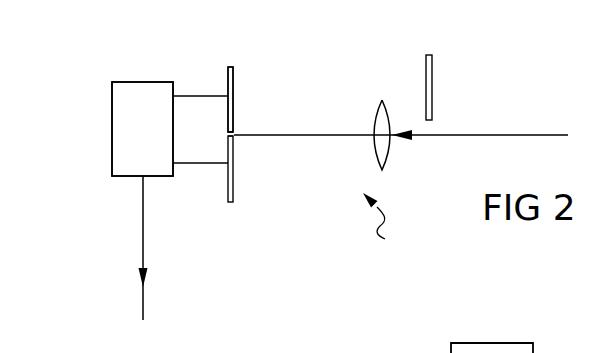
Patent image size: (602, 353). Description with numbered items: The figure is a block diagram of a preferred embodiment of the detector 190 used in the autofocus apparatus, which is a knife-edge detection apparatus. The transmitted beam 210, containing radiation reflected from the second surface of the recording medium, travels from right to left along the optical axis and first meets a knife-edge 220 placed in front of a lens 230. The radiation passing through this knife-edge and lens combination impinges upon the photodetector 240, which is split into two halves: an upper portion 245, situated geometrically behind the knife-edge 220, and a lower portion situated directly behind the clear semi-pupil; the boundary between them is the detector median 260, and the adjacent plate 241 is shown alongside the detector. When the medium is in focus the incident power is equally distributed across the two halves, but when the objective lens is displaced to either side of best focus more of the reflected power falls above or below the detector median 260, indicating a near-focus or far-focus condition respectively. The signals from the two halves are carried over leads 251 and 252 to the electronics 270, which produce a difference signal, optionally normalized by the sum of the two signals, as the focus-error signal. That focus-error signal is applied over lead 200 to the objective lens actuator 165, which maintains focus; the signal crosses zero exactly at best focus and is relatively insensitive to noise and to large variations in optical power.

The photodetector 240 is at (135, 58).
The lead 251 is at (209, 96).
The lead 252 is at (202, 163).
The slit plate 241 is at (233, 187).
The upper portion 245 is at (283, 66).
The detector median 260 is at (237, 130).
The transmitted beam 210 is at (479, 136).
The lens 230 is at (377, 118).
The knife-edge 220 is at (432, 103).
The detector 190 is at (393, 222).
The electronics 270 is at (123, 178).
The lead 200 is at (143, 253).
The objective lens actuator 165 is at (174, 332).